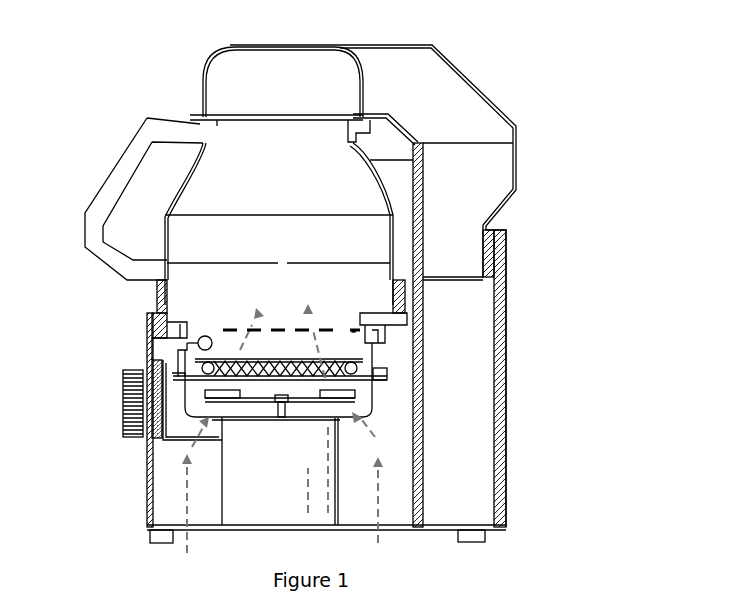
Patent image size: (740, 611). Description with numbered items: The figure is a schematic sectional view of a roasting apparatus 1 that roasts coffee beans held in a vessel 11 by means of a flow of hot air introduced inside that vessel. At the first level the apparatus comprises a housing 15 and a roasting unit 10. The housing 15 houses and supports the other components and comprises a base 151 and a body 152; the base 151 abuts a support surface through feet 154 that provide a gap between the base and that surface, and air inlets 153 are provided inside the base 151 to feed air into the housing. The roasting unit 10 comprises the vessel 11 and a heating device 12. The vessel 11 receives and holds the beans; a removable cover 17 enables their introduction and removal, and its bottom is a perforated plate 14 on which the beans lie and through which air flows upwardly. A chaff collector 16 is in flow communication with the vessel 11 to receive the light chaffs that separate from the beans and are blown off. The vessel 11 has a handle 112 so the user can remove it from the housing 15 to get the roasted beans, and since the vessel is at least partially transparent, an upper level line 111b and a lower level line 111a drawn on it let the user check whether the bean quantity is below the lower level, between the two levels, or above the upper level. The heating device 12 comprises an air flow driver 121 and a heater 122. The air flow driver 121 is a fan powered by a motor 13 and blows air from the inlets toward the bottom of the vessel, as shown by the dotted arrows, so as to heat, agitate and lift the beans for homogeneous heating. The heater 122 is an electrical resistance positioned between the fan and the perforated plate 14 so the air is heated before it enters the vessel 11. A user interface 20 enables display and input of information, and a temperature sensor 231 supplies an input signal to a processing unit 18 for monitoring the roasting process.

The roasting apparatus 1 is at (538, 59).
The roasting unit 10 is at (641, 300).
The vessel 11 is at (393, 247).
The lower level line 111a is at (230, 258).
The upper level line 111b is at (245, 206).
The handle 112 is at (93, 190).
The heating device 12 is at (406, 384).
The air flow driver 121 is at (345, 400).
The heater 122 is at (360, 369).
The motor 13 is at (340, 468).
The perforated plate 14 is at (355, 331).
The housing 15 is at (402, 548).
The base 151 is at (427, 532).
The body 152 is at (505, 507).
The air inlets 153 is at (387, 532).
The feet 154 is at (487, 535).
The chaff collector 16 is at (513, 183).
The removable cover 17 is at (203, 77).
The processing unit 18 is at (148, 358).
The user interface 20 is at (122, 397).
The temperature sensor 231 is at (210, 335).